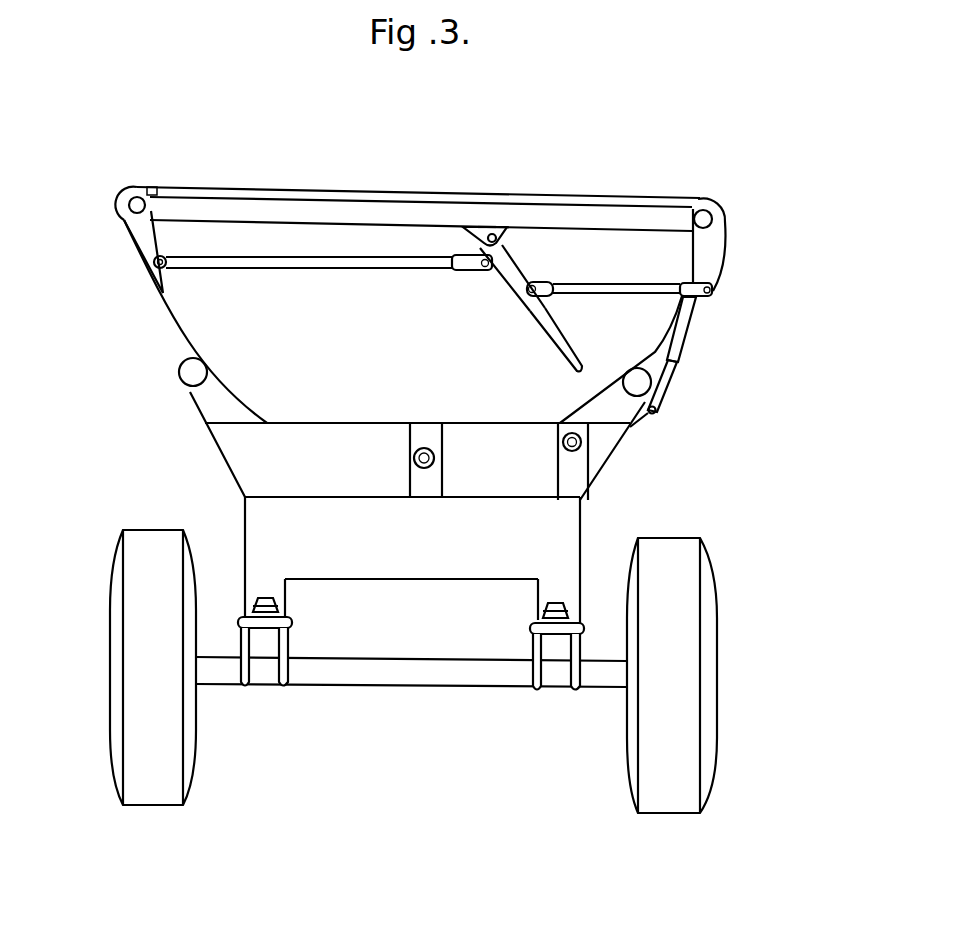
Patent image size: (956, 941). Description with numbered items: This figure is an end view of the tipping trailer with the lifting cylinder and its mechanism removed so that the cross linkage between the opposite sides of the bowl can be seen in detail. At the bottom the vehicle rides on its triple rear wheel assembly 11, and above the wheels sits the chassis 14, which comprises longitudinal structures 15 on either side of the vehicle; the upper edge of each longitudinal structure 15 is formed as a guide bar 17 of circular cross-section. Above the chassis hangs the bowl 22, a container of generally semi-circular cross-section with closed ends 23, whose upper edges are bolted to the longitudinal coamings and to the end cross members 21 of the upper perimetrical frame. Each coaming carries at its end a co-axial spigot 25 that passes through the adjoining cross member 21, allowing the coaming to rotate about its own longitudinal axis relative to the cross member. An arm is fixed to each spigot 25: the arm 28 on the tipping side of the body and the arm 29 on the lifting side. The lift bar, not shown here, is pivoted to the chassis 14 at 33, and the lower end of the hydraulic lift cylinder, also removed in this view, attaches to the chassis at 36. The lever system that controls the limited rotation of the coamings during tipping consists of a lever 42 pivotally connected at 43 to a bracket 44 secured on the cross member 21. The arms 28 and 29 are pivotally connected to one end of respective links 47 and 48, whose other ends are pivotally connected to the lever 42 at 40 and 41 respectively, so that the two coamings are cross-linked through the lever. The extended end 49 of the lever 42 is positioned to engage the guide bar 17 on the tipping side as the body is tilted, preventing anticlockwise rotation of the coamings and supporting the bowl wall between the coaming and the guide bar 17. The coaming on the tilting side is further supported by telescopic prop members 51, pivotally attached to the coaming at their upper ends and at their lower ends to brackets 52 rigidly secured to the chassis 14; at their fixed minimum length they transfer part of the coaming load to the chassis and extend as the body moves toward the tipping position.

The triple rear wheel assembly 11 is at (683, 703).
The chassis 14 is at (282, 523).
The longitudinal structures 15 is at (232, 447).
The guide bar 17 is at (185, 378).
The end cross members 21 is at (373, 212).
The bowl 22 is at (157, 328).
The closed ends 23 is at (324, 354).
The spigot 25 is at (139, 190).
The arm 28 is at (708, 262).
The arm 29 is at (147, 237).
The pivotal connection 33 is at (581, 448).
The pivotal attachment 36 is at (424, 446).
The pivotal connection 40 is at (538, 270).
The pivotal connection 41 is at (481, 244).
The lever 42 is at (500, 275).
The pivotal connection 43 is at (494, 240).
The bracket 44 is at (486, 224).
The link 47 is at (621, 285).
The link 48 is at (268, 255).
The extended end 49 is at (552, 353).
The telescopic prop members 51 is at (687, 339).
The brackets 52 is at (660, 414).